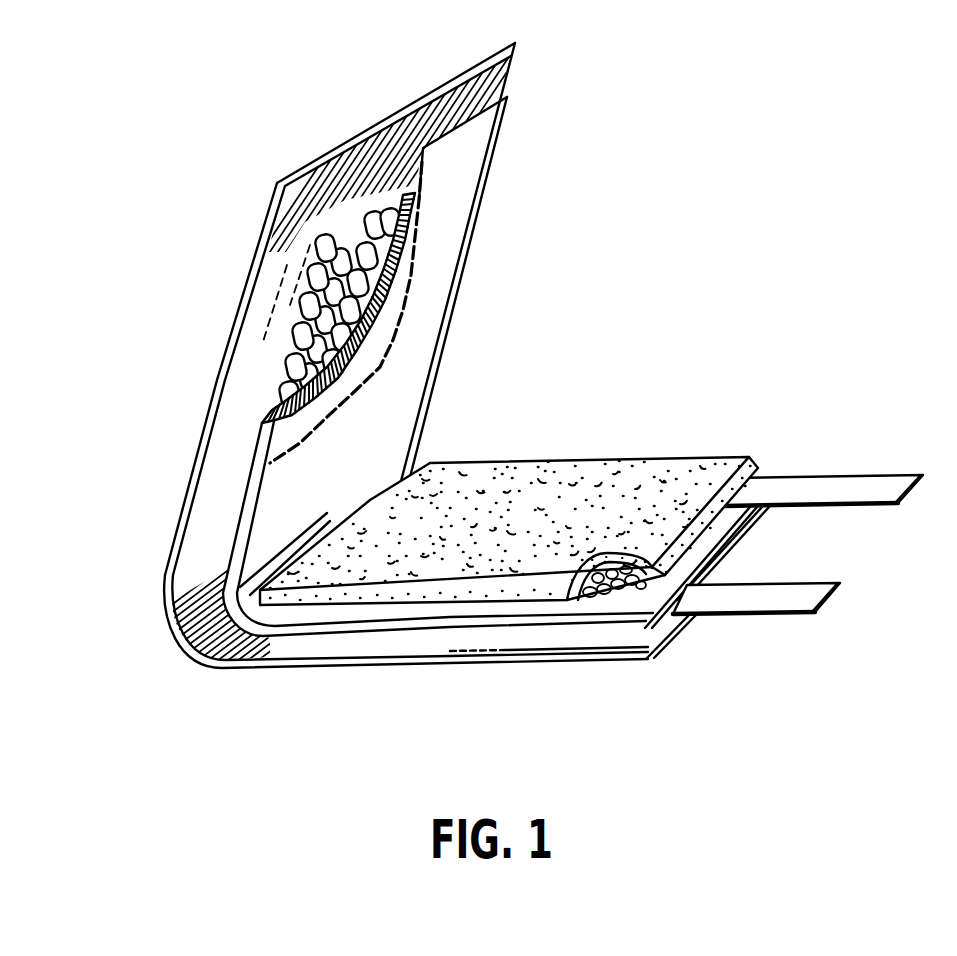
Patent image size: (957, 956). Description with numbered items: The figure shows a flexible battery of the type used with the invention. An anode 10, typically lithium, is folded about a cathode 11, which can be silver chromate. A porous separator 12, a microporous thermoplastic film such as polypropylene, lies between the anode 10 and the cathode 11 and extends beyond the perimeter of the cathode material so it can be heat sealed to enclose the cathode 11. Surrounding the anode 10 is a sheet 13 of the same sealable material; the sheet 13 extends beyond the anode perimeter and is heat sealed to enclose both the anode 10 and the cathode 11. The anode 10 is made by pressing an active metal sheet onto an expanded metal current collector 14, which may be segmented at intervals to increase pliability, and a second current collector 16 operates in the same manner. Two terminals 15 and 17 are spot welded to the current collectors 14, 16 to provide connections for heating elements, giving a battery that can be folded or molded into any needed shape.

The anode 10 is at (264, 442).
The cathode 11 is at (540, 468).
The porous separator 12 is at (459, 187).
The sheet 13 is at (205, 427).
The expanded metal current collector 14 is at (358, 243).
The terminal 15 is at (812, 592).
The current collector 16 is at (570, 587).
The terminal 17 is at (872, 483).